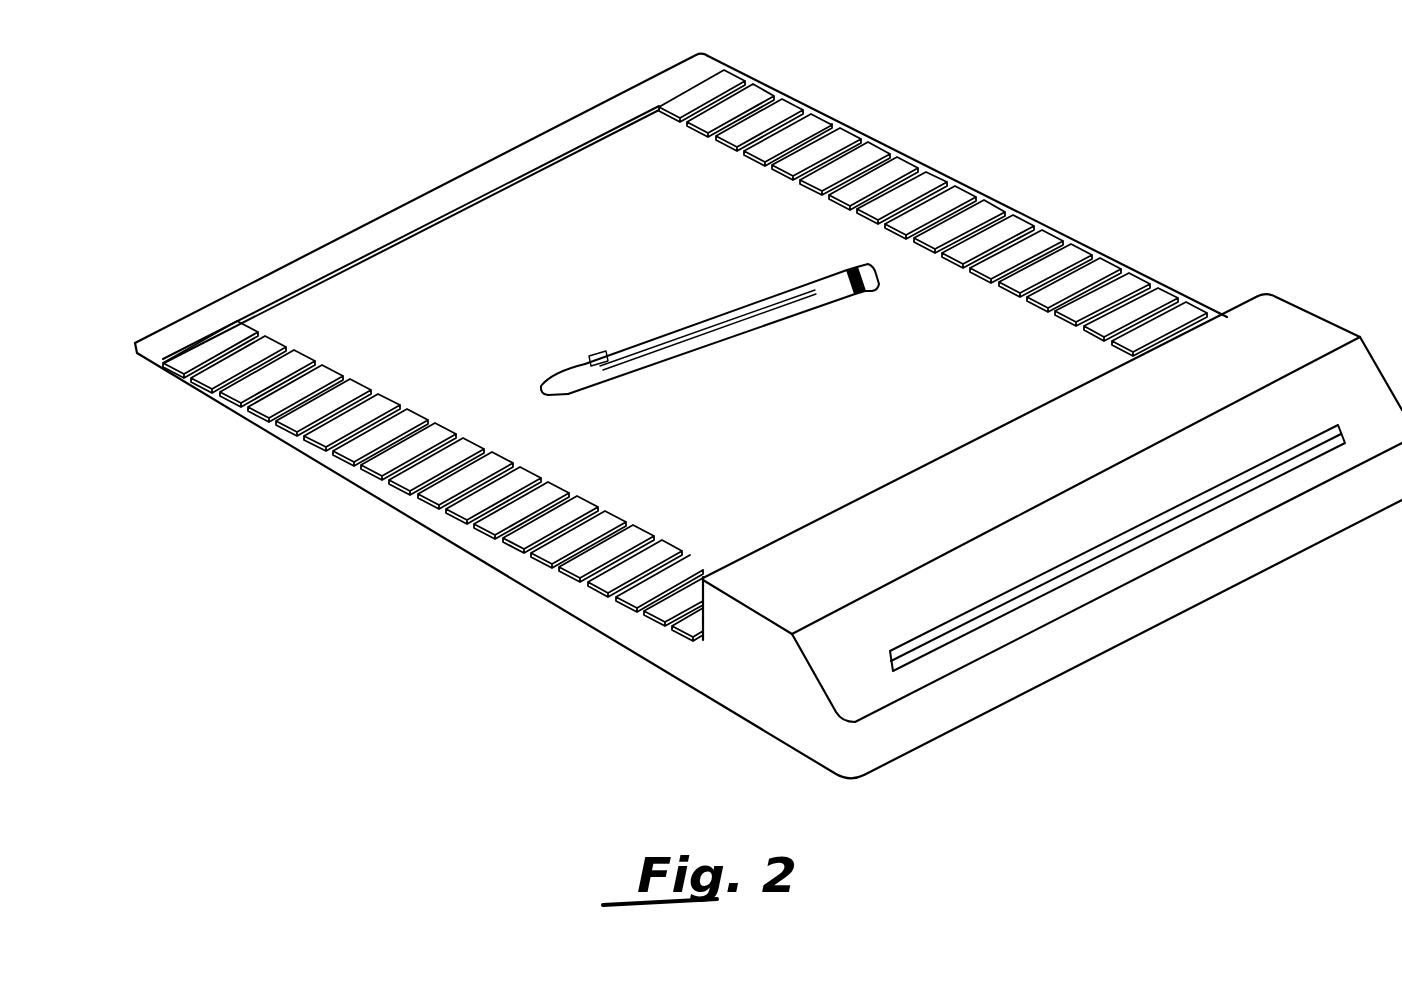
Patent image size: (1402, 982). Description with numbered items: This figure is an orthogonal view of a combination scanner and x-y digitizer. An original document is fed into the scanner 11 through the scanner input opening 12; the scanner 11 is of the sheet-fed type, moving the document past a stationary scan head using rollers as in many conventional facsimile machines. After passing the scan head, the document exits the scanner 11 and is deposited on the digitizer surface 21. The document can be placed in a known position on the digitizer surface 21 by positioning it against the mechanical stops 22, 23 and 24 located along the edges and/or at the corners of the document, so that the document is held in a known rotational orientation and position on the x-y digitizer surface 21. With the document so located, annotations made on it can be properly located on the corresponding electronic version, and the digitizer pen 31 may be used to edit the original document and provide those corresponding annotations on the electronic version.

The scanner 11 is at (1252, 365).
The scanner input opening 12 is at (1132, 538).
The digitizer surface 21 is at (588, 233).
The mechanical stop 22 is at (373, 250).
The mechanical stop 23 is at (965, 267).
The mechanical stop 24 is at (487, 478).
The digitizer pen 31 is at (740, 322).